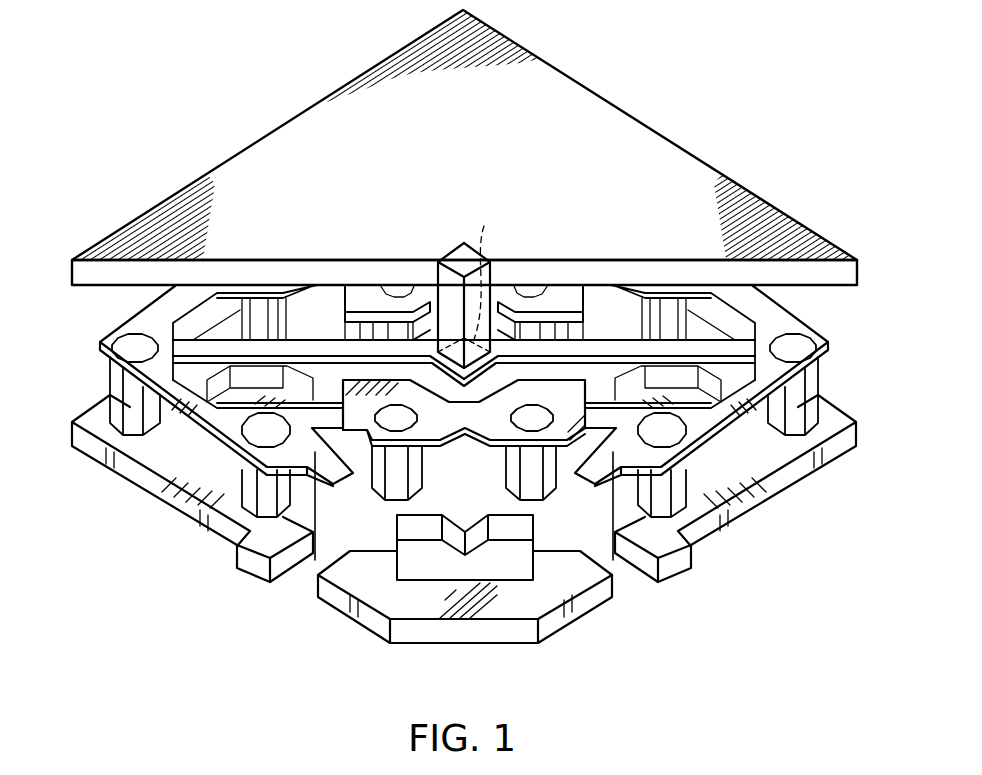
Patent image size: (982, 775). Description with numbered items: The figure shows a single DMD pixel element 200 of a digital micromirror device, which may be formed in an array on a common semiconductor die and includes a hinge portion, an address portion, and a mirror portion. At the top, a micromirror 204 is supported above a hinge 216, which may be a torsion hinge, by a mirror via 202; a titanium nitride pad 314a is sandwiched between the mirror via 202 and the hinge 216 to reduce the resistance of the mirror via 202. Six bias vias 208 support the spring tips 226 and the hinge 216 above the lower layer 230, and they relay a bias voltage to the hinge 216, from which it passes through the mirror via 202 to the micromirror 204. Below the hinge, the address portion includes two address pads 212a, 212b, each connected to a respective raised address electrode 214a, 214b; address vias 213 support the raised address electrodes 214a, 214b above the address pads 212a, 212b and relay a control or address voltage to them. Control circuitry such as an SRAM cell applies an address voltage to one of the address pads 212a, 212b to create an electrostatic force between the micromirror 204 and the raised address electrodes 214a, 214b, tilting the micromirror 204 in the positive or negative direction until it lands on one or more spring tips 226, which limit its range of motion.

The DMD pixel element 200 is at (309, 64).
The micromirror 204 is at (612, 124).
The mirror via 202 is at (458, 262).
The titanium nitride pad 314a is at (502, 272).
The hinge 216 is at (275, 345).
The raised address electrode 214b is at (400, 330).
The address pad 212b is at (572, 330).
The bias vias 208 is at (112, 390).
The lower layer 230 is at (160, 492).
The spring tips 226 is at (266, 550).
The raised address electrode 214a is at (455, 420).
The address vias 213 is at (392, 490).
The address pad 212a is at (462, 634).